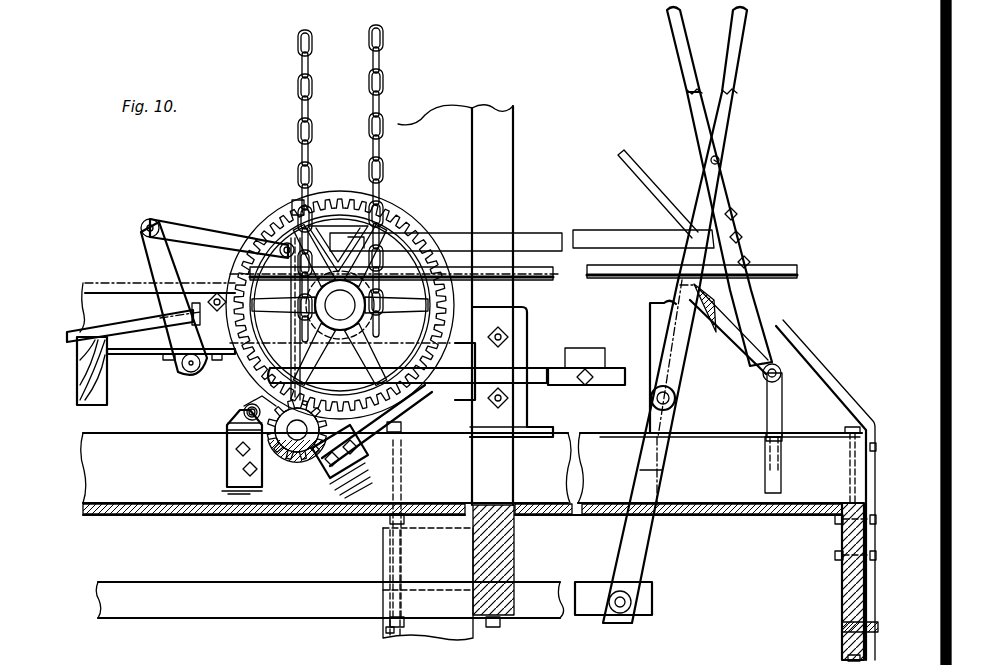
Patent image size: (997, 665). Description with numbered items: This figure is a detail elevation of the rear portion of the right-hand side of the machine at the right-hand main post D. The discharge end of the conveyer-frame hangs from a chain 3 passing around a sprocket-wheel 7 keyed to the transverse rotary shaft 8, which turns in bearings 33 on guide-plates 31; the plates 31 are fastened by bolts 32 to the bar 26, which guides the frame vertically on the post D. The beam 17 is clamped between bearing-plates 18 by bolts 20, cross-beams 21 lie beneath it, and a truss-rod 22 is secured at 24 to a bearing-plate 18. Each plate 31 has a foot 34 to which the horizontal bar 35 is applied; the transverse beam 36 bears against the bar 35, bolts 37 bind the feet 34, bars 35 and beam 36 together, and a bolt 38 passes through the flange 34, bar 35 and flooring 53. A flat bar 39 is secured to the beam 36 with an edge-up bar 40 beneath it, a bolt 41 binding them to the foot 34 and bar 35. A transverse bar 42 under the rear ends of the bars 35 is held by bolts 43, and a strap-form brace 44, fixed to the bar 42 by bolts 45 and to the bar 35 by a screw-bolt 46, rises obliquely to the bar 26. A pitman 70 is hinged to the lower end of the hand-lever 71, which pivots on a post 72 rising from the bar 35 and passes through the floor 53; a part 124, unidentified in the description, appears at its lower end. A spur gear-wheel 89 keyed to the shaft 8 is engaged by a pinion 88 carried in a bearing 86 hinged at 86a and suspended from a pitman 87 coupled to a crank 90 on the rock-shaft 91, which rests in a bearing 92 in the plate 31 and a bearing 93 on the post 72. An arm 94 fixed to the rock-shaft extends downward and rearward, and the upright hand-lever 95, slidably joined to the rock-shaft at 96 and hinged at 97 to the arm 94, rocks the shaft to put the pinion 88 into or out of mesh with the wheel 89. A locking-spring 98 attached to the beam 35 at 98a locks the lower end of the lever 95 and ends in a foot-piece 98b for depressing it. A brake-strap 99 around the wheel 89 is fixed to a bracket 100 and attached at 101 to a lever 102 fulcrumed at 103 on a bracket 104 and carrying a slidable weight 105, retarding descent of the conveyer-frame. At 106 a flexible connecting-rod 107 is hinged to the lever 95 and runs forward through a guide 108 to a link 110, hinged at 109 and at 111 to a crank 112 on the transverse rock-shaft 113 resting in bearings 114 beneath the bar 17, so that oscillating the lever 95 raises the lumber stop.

The chain 3 is at (314, 162).
The sprocket-wheel 7 is at (300, 380).
The horizontal transverse rotary shaft 8 is at (340, 305).
The beam or bar 17 is at (100, 280).
The bearing-plates 18 is at (212, 292).
The bolts 20 is at (216, 312).
The cross bars or beams 21 is at (95, 382).
The truss-rod 22 is at (138, 328).
The truss-rod attachment point 24 is at (145, 358).
The bar 26 is at (514, 216).
The guide-plates 31 is at (528, 354).
The bolts 32 is at (508, 336).
The bearings 33 is at (428, 236).
The lateral horizontal flange or foot 34 is at (560, 430).
The horizontal bar 35 is at (471, 468).
The beam 36 is at (516, 558).
The bolts 37 is at (438, 432).
The bolt 38 is at (402, 424).
The flat bar 39 is at (440, 528).
The flat bar 40 is at (390, 522).
The bolt 41 is at (386, 630).
The bar 42 is at (842, 588).
The bolts 43 is at (836, 519).
The strap-form brace 44 is at (825, 490).
The bolts 45 is at (836, 556).
The screw or screw-bolt 46 is at (870, 448).
The flooring 53 is at (178, 520).
The bar or pitman 70 is at (374, 600).
The hand-lever 71 is at (645, 570).
The post 72 is at (680, 432).
The bearing 86 is at (226, 482).
The hinge of bearing 86a is at (372, 450).
The pitman 87 is at (246, 408).
The pinion 88 is at (286, 460).
The spur gear-wheel 89 is at (352, 196).
The crank 90 is at (306, 283).
The rock-shaft 91 is at (548, 280).
The bearing 92 is at (294, 204).
The bearing 93 is at (618, 300).
The arm 94 is at (730, 345).
The hand-lever 95 is at (775, 338).
The sliding joint 96 is at (775, 280).
The hinge 97 is at (766, 382).
The locking-spring 98 is at (783, 428).
The spring attachment point 98a is at (766, 445).
The foot-piece 98b is at (770, 495).
The brake-strap 99 is at (386, 210).
The bracket 100 is at (359, 480).
The brake-strap attachment point 101 is at (247, 412).
The lever 102 is at (477, 377).
The fulcrum 103 is at (228, 424).
The bracket 104 is at (238, 446).
The slidable weight 105 is at (587, 359).
The hinge of connecting-rod 106 is at (752, 236).
The flexible connecting-rod 107 is at (628, 232).
The guide 108 is at (350, 240).
The hinge of link 109 is at (276, 246).
The link 110 is at (236, 240).
The hinge of link to crank 111 is at (150, 220).
The crank 112 is at (222, 232).
The rock-shaft 113 is at (188, 370).
The bearings 114 is at (236, 368).
The pivot 124 is at (619, 625).
The main post D is at (418, 124).